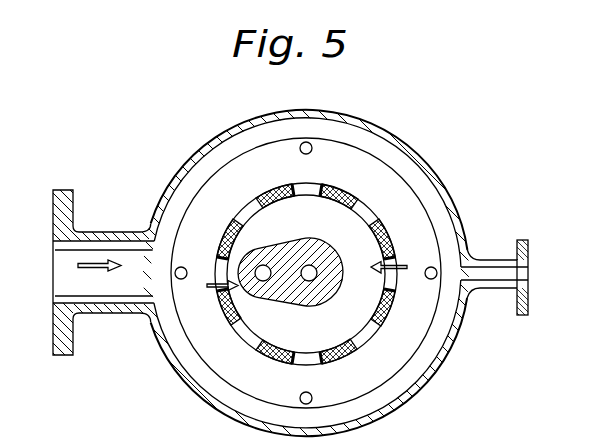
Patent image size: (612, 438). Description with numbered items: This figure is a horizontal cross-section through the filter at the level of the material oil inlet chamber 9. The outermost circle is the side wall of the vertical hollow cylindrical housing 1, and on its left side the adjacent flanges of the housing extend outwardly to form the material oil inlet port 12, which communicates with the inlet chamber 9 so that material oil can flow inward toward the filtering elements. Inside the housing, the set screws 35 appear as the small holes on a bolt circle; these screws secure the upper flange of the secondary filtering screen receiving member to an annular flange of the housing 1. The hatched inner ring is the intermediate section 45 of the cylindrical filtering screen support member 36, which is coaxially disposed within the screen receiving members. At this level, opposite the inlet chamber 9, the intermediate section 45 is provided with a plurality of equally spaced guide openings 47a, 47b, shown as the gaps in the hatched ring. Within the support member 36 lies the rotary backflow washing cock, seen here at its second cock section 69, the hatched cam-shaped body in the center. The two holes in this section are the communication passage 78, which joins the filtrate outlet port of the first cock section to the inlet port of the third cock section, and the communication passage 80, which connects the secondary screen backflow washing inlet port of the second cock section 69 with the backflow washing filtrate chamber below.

The housing 1 is at (432, 375).
The material oil inlet chamber 9 is at (398, 343).
The material oil inlet port 12 is at (100, 295).
The set screws 35 is at (183, 280).
The filtering screen support member 36 is at (372, 272).
The intermediate section 45 is at (372, 272).
The guide opening 47a is at (397, 280).
The guide opening 47b is at (378, 198).
The second cock section 69 is at (306, 293).
The communication passage 78 is at (316, 273).
The communication passage 80 is at (262, 279).